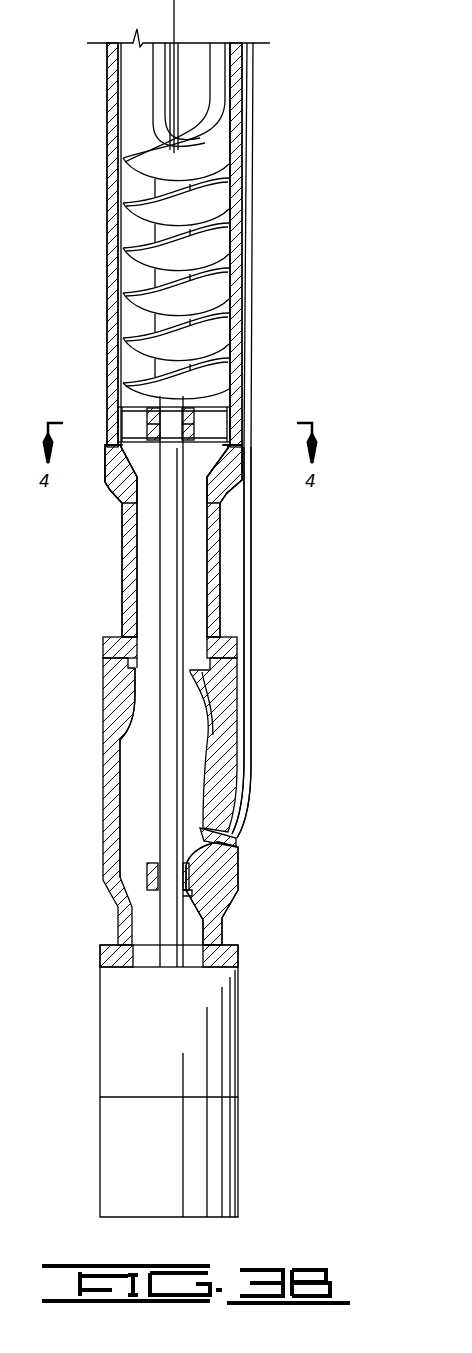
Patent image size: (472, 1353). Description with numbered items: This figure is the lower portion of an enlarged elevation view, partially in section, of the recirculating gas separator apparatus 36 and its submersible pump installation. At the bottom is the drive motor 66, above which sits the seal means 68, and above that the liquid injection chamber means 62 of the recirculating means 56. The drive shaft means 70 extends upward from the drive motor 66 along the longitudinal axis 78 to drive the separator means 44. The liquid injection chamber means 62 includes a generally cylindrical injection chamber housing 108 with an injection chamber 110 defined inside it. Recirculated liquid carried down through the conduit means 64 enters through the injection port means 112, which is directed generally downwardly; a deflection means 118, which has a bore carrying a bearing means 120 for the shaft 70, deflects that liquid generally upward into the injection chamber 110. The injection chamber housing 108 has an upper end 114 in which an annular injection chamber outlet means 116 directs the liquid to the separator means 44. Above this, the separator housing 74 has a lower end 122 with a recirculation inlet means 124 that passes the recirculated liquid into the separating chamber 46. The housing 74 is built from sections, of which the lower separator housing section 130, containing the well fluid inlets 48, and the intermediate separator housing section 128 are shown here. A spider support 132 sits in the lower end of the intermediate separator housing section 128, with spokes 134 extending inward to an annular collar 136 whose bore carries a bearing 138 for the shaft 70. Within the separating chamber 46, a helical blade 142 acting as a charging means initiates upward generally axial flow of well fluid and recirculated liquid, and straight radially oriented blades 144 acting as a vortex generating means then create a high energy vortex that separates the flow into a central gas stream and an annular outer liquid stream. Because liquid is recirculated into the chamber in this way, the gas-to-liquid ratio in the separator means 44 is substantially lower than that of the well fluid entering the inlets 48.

The recirculating gas separator apparatus 36 is at (283, 183).
The rotary gas separator means 44 is at (244, 112).
The separating chamber 46 is at (222, 270).
The well fluid inlets 48 is at (225, 492).
The recirculating means 56 is at (222, 877).
The liquid injection chamber means 62 is at (222, 877).
The conduit means 64 is at (245, 602).
The drive motor 66 is at (192, 1153).
The seal means 68 is at (192, 1023).
The drive shaft means 70 is at (168, 773).
The separator housing 74 is at (215, 542).
The longitudinal axis 78 is at (178, 15).
The injection chamber housing 108 is at (113, 720).
The injection chamber 110 is at (130, 753).
The injection port means 112 is at (232, 834).
The upper end 114 is at (238, 647).
The annular injection chamber outlet means 116 is at (152, 677).
The deflection means 118 is at (192, 887).
The bearing means 120 is at (147, 873).
The lower end 122 is at (205, 683).
The recirculation inlet means 124 is at (207, 707).
The intermediate separator housing section 128 is at (237, 290).
The lower separator housing section 130 is at (215, 542).
The spider support 132 is at (212, 420).
The spokes 134 is at (212, 420).
The annular collar 136 is at (195, 428).
The bearing 138 is at (155, 422).
The helical blade 142 is at (140, 250).
The straight radially oriented blades 144 is at (208, 72).